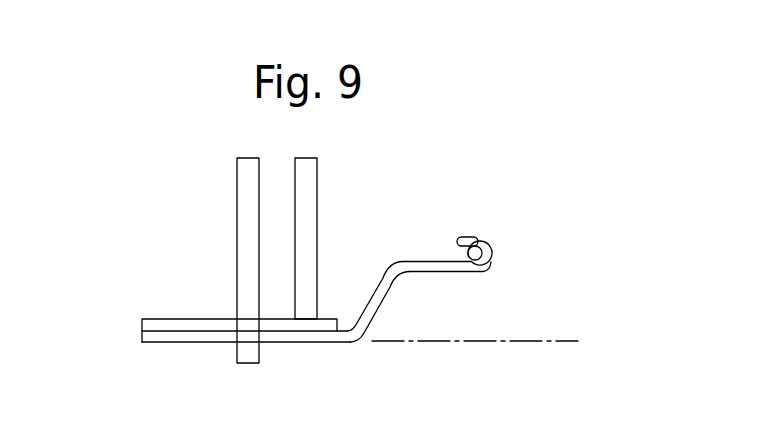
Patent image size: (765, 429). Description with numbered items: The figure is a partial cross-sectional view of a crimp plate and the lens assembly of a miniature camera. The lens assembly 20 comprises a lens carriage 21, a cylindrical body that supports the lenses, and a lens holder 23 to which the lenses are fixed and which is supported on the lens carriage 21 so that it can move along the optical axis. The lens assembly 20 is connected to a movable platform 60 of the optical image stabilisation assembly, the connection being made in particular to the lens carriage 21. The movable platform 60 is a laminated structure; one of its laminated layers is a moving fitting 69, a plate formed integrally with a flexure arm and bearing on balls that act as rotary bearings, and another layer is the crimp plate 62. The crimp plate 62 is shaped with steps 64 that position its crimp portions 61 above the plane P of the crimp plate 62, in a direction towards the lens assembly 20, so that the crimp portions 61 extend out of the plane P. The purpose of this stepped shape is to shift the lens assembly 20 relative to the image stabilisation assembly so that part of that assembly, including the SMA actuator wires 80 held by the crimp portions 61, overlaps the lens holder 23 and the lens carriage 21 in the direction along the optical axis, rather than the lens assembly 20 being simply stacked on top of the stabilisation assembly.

The lens assembly 20 is at (231, 288).
The lens carriage 21 is at (245, 198).
The lens holder 23 is at (310, 185).
The moving fitting 69 is at (275, 325).
The movable platform 60 is at (289, 298).
The crimp plate 62 is at (320, 335).
The steps 64 is at (378, 298).
The crimp portions 61 is at (470, 243).
The SMA actuator wires 80 is at (477, 237).
The plane of the crimp plate P is at (517, 342).